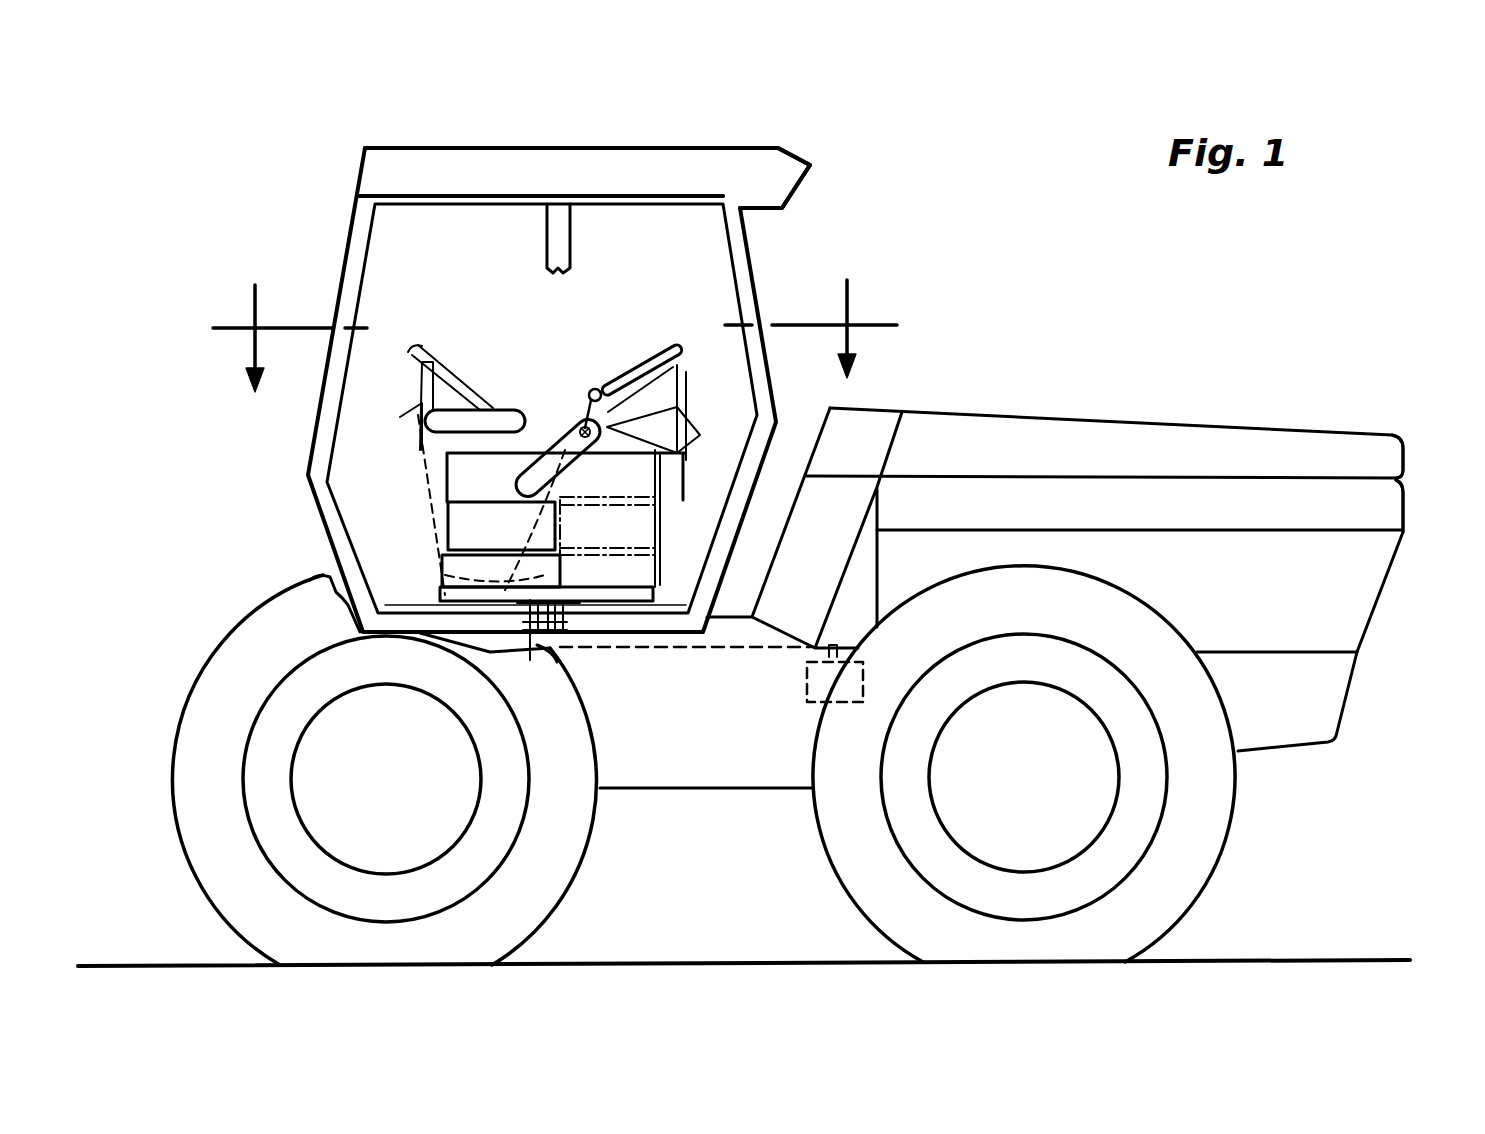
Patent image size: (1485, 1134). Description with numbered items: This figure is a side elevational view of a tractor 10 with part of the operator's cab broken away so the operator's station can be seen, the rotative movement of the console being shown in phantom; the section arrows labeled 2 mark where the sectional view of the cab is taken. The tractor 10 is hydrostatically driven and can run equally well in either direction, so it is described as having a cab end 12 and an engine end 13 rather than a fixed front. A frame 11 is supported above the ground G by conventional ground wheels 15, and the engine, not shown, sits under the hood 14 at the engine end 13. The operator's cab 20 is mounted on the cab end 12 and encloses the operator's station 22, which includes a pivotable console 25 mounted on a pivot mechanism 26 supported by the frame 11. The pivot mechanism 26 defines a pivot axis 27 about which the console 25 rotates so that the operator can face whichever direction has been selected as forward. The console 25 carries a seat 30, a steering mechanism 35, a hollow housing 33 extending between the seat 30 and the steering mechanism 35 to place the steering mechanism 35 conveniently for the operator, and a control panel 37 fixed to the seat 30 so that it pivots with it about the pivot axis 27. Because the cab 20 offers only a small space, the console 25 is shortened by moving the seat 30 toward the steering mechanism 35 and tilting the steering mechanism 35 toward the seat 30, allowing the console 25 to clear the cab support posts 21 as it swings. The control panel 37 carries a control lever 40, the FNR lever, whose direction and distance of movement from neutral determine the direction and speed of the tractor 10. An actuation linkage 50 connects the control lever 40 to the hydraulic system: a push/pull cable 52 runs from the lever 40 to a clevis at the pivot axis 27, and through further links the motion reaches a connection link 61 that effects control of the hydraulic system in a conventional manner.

The tractor 10 is at (1033, 282).
The section line 2- 2 is at (555, 320).
The frame 11 is at (695, 780).
The cab end 12 is at (357, 224).
The engine end 13 is at (1405, 462).
The hood 14 is at (1210, 447).
The ground wheels 15 is at (552, 890).
The operator's cab 20 is at (673, 162).
The cab support posts 21 is at (553, 232).
The operator's station 22 is at (457, 527).
The console 25 is at (628, 600).
The pivot mechanism 26 is at (530, 613).
The pivot axis 27 is at (555, 528).
The seat 30 is at (430, 430).
The hollow housing 33 is at (738, 500).
The steering mechanism 35 is at (663, 388).
The control panel 37 is at (557, 420).
The control lever 40 is at (588, 388).
The actuation linkage 50 is at (540, 664).
The push/pull cable 52 is at (446, 568).
The connection link 61 is at (655, 656).
The ground G is at (1240, 957).